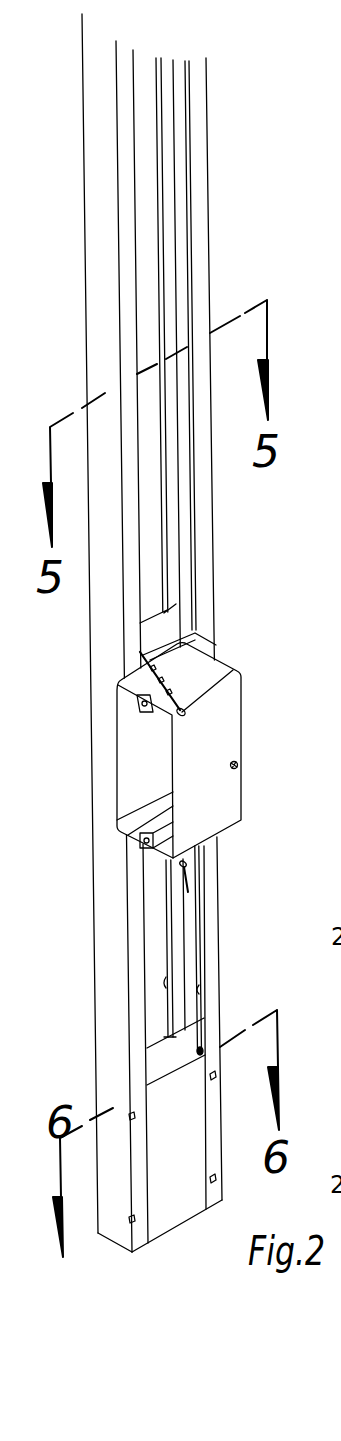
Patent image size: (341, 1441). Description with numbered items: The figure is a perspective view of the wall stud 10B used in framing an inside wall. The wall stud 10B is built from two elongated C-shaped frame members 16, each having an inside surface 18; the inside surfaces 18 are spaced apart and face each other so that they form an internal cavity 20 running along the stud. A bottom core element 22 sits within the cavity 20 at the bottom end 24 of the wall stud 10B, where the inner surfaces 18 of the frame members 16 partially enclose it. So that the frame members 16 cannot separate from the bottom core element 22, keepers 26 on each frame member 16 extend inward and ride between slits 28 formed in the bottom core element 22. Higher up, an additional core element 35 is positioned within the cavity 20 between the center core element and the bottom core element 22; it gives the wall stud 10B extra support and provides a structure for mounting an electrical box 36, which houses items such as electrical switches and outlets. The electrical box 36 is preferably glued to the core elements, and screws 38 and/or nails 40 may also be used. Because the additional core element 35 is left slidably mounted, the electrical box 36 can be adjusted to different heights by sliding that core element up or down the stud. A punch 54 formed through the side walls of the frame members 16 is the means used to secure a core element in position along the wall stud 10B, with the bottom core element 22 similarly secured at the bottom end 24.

The C-shaped frame member 16 is at (100, 103).
The inside surface 18 is at (186, 510).
The wall stud 10B is at (258, 633).
The additional core element 35 is at (163, 632).
The electrical box 36 is at (223, 707).
The screw 38 is at (240, 767).
The nail 40 is at (175, 694).
The internal cavity 20 is at (155, 918).
The keeper 26 is at (170, 990).
The slit 28 is at (198, 1048).
The punch 54 is at (216, 1177).
The bottom core element 22 is at (172, 1214).
The bottom end 24 is at (120, 1247).